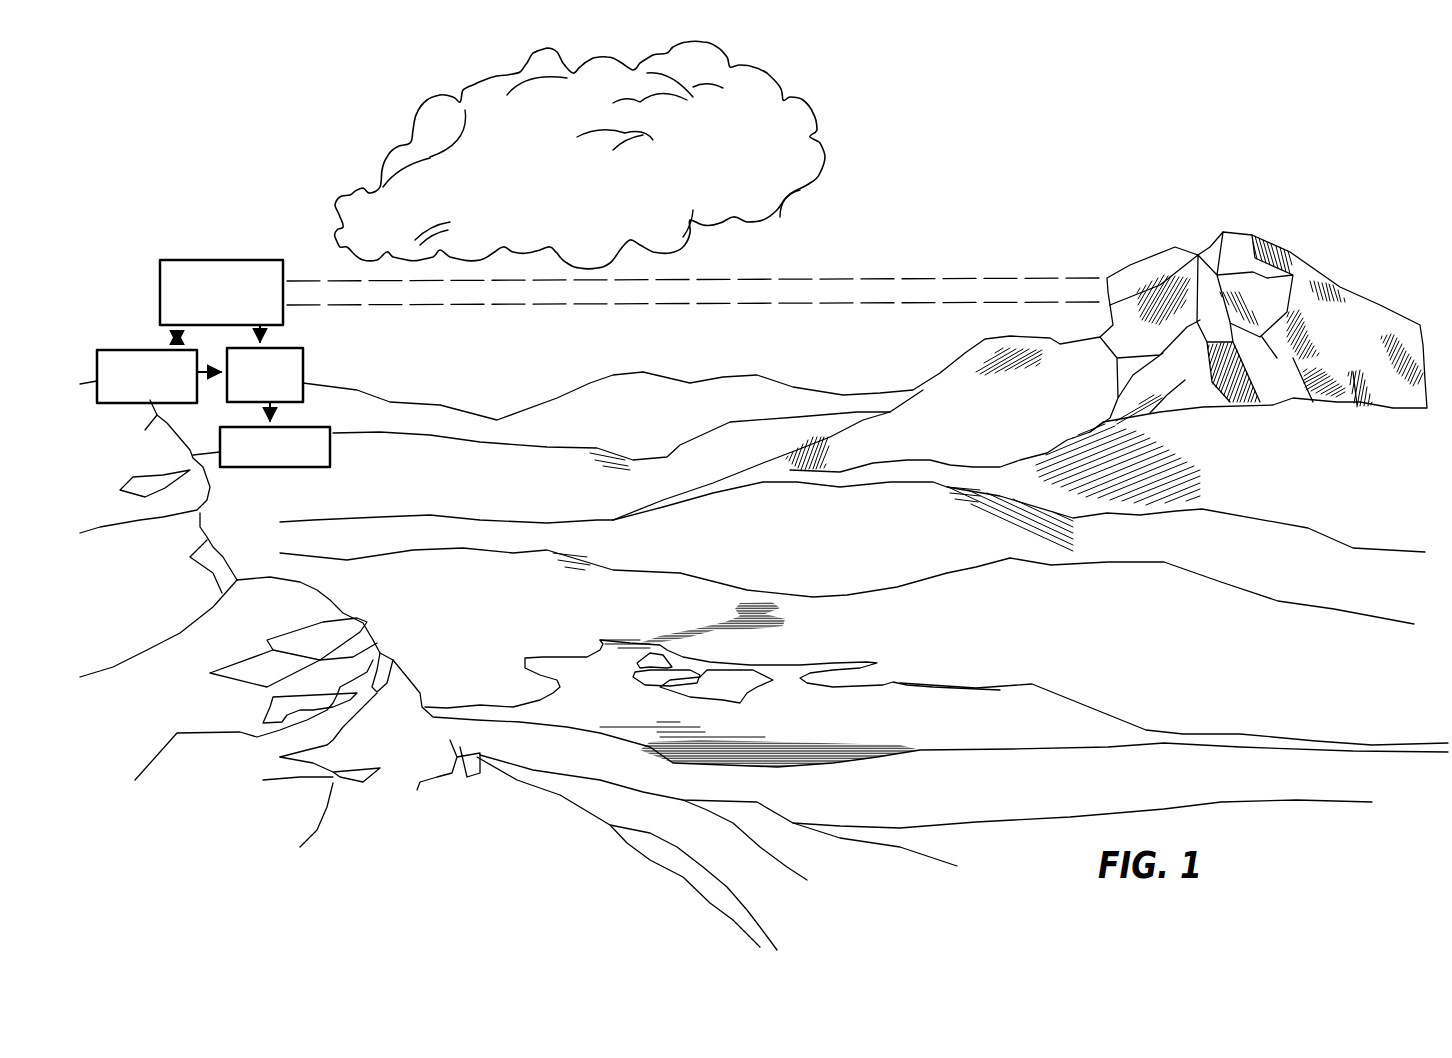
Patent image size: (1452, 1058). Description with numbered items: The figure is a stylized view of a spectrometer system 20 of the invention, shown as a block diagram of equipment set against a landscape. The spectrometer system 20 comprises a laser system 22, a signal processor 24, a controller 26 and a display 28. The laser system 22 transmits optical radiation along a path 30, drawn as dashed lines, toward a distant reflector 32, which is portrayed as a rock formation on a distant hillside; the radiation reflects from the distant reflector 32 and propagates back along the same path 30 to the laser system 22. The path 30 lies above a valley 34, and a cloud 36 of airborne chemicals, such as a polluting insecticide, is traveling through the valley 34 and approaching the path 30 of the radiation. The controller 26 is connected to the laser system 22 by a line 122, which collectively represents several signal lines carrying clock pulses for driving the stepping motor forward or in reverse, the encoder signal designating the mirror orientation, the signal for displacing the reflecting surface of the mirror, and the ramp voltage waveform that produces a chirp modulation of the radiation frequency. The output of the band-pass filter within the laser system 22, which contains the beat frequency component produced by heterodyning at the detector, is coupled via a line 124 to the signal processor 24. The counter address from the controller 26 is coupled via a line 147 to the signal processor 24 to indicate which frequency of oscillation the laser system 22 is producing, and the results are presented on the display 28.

The spectrometer system 20 is at (275, 196).
The laser system 22 is at (205, 257).
The signal processor 24 is at (303, 360).
The controller 26 is at (128, 348).
The display 28 is at (330, 452).
The path 30 is at (555, 308).
The distant reflector 32 is at (1132, 268).
The valley 34 is at (918, 726).
The cloud 36 is at (780, 80).
The line 122 is at (183, 336).
The line 124 is at (267, 337).
The line 147 is at (212, 377).